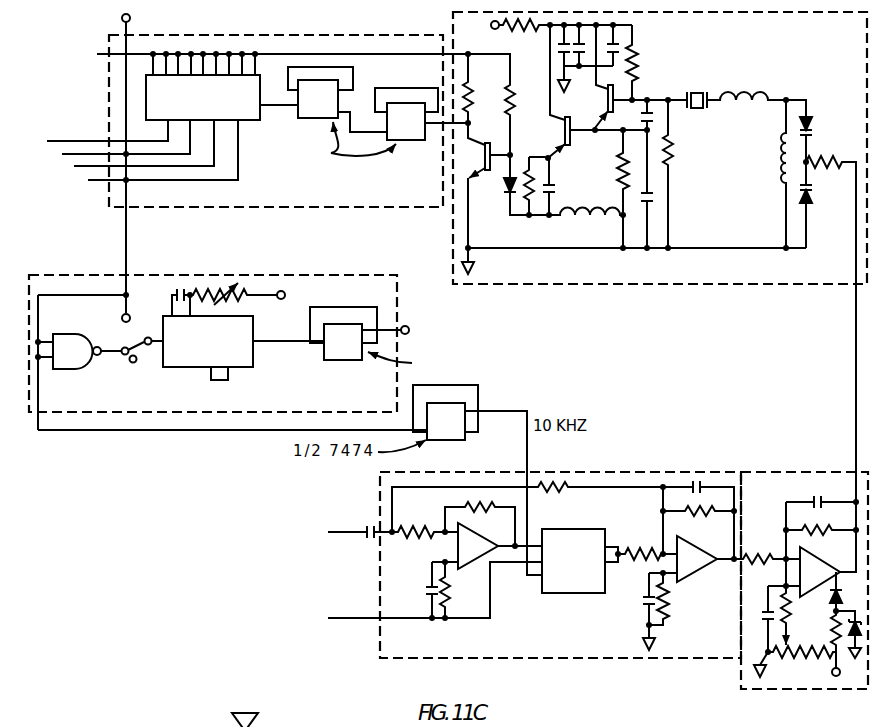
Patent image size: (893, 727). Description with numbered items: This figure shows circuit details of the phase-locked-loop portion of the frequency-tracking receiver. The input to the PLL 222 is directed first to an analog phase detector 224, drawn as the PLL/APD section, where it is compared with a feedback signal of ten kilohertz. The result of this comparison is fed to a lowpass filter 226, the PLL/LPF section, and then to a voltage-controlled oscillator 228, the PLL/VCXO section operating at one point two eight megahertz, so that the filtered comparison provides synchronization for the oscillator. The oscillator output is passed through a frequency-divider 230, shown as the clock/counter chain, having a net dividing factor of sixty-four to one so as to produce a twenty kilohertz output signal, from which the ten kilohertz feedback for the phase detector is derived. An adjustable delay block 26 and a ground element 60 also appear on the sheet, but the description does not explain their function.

The frequency-divider 230 is at (290, 35).
The voltage-controlled oscillator 228 is at (725, 284).
The adjustable delay circuit 26 is at (295, 275).
The PLL 222 is at (621, 472).
The analog phase detector 224 is at (526, 549).
The lowpass filter 226 is at (773, 472).
The ground/reference element 60 is at (219, 720).